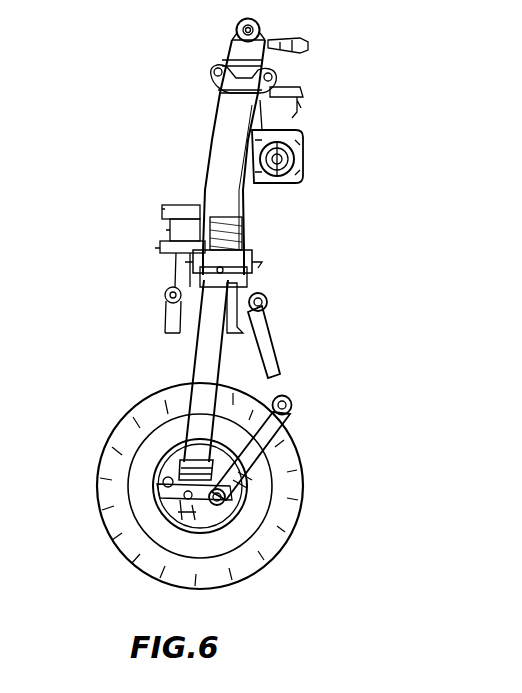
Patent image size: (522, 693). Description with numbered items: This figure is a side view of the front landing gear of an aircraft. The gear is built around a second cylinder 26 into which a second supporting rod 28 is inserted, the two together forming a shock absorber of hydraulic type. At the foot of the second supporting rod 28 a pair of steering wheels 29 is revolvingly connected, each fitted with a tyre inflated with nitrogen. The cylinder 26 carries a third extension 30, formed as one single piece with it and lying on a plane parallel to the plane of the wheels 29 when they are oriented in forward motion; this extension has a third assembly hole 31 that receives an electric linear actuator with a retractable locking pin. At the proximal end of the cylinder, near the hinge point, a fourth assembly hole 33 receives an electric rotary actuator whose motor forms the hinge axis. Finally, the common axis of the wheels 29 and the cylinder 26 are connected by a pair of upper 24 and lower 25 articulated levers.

The upper articulated lever 24 is at (265, 325).
The lower articulated lever 25 is at (287, 425).
The second cylinder 26 is at (215, 163).
The second supporting rod 28 is at (207, 363).
The steering wheels 29 is at (162, 485).
The third extension 30 is at (267, 187).
The third assembly hole 31 is at (300, 161).
The fourth assembly hole 33 is at (236, 32).